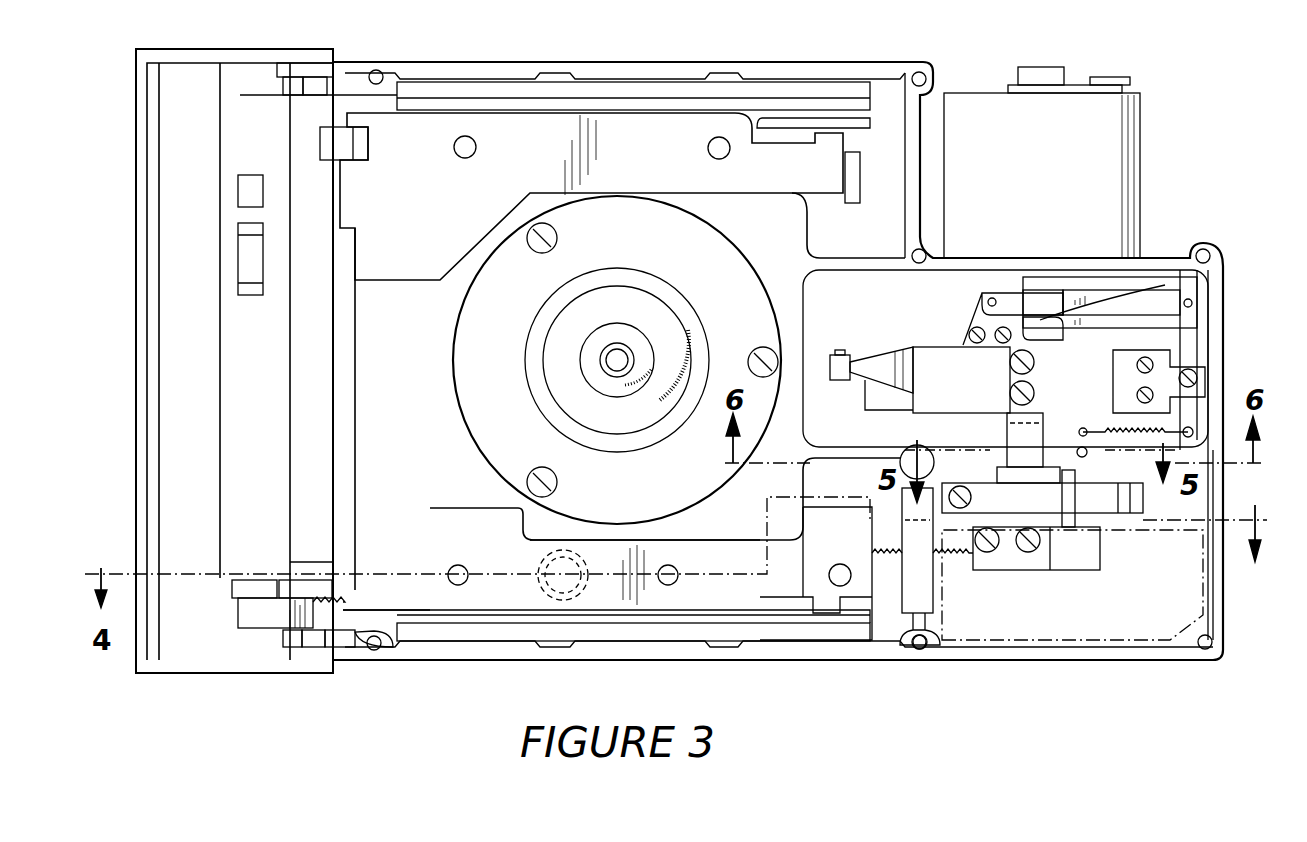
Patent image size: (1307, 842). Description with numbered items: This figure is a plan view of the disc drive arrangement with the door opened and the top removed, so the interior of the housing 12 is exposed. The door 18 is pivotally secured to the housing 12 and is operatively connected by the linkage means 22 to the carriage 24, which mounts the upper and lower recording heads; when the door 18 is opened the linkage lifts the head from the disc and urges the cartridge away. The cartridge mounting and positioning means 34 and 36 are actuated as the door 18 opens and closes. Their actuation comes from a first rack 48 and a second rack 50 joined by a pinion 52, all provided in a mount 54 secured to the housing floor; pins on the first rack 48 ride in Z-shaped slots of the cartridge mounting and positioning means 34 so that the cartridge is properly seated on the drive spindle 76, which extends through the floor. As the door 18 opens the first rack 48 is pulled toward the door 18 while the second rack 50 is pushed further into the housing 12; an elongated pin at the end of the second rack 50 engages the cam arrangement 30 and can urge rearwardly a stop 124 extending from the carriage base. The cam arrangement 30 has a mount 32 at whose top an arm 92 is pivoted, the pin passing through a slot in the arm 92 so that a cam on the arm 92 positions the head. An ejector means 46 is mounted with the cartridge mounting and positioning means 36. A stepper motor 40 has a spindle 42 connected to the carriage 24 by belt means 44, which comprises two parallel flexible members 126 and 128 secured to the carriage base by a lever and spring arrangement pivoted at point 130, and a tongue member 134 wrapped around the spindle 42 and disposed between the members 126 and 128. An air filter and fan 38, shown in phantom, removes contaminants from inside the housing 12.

The housing 12 is at (1224, 335).
The door 18 is at (139, 413).
The linkage means 22 is at (495, 672).
The carriage 24 is at (893, 328).
The cam arrangement 30 is at (1000, 436).
The mount 32 is at (1208, 545).
The cartridge mounting and positioning means 34 is at (670, 668).
The cartridge mounting and positioning means 36 is at (513, 48).
The air filter and fan 38 is at (1105, 640).
The stepper motor 40 is at (1112, 176).
The spindle 42 is at (1049, 272).
The belt means 44 is at (1113, 283).
The ejector means 46 is at (888, 186).
The first rack 48 is at (297, 614).
The second rack 50 is at (880, 540).
The pinion 52 is at (563, 600).
The mount 54 is at (492, 546).
The drive spindle 76 is at (617, 360).
The arm 92 is at (1075, 468).
The stop 124 is at (1090, 495).
The flexible member 126 is at (965, 332).
The flexible member 128 is at (1200, 298).
The pivot point 130 is at (1192, 377).
The tongue member 134 is at (1002, 295).